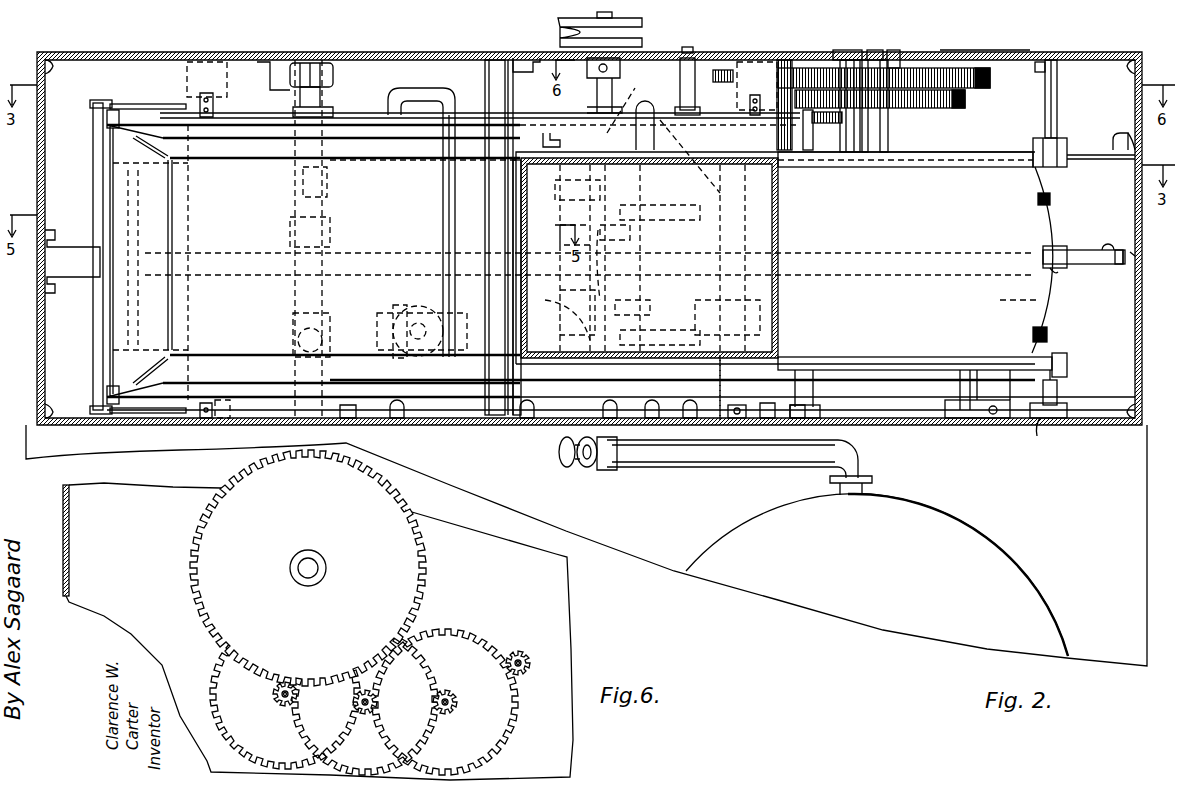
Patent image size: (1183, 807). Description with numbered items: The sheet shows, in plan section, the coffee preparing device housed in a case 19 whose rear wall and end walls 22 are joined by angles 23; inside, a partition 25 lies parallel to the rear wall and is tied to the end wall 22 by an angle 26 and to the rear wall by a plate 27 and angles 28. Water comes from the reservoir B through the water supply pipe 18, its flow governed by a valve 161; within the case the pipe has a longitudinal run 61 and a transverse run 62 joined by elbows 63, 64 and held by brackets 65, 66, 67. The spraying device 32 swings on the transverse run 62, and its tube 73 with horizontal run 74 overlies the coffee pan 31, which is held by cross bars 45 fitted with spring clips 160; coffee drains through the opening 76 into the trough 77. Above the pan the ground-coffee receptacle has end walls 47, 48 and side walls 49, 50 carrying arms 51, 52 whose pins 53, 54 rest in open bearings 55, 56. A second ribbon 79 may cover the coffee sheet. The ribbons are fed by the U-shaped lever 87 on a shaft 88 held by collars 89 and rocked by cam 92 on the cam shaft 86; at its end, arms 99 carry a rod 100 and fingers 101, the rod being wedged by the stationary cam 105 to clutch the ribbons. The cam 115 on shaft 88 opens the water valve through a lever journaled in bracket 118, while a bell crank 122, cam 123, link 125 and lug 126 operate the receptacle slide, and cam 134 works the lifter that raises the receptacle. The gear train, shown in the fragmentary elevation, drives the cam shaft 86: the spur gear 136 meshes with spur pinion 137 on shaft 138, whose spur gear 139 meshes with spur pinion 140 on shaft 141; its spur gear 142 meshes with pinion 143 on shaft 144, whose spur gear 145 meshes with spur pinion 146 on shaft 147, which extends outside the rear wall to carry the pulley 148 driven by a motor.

In FIG. 2, the water supply pipe 18 is at (668, 467).
In FIG. 2, the case 19 is at (992, 58).
In FIG. 2, the end wall 22 is at (45, 90).
In FIG. 2, the angle 23 is at (50, 58).
In FIG. 2, the partition 25 is at (1080, 160).
In FIG. 2, the angle 26 is at (1113, 147).
In FIG. 2, the plate 27 is at (540, 107).
In FIG. 2, the angle 28 is at (523, 58).
In FIG. 2, the coffee pan 31 is at (245, 126).
In FIG. 2, the spraying device 32 is at (340, 125).
In FIG. 2, the cross bar 45 is at (227, 70).
In FIG. 2, the end wall 47 is at (524, 216).
In FIG. 2, the end wall 48 is at (772, 220).
In FIG. 2, the side wall 49 is at (603, 160).
In FIG. 2, the side wall 50 is at (680, 364).
In FIG. 2, the arm 51 is at (905, 158).
In FIG. 2, the arm 52 is at (918, 366).
In FIG. 2, the pin 53 is at (1045, 97).
In FIG. 2, the pin 54 is at (1060, 394).
In FIG. 2, the bearing 55 is at (1040, 62).
In FIG. 2, the bearing 56 is at (1046, 437).
In FIG. 2, the longitudinal run 61 is at (362, 330).
In FIG. 2, the transverse run 62 is at (295, 292).
In FIG. 2, the elbow 63 is at (293, 316).
In FIG. 2, the elbow 64 is at (558, 310).
In FIG. 2, the bracket 65 is at (290, 80).
In FIG. 2, the bracket 66 is at (345, 418).
In FIG. 2, the bracket 67 is at (538, 418).
In FIG. 2, the tube 73 is at (400, 88).
In FIG. 2, the horizontal run 74 is at (449, 214).
In FIG. 2, the opening 76 is at (296, 342).
In FIG. 2, the trough 77 is at (340, 440).
In FIG. 2, the second ribbon 79 is at (516, 380).
In FIG. 2, the cam shaft 86 is at (848, 50).
In FIG. 6, the cam shaft 86 is at (318, 566).
In FIG. 2, the U-shaped lever 87 is at (240, 256).
In FIG. 2, the shaft 88 is at (718, 380).
In FIG. 2, the collar 89 is at (736, 418).
In FIG. 2, the cam 92 is at (1040, 305).
In FIG. 2, the arm 99 is at (113, 110).
In FIG. 2, the rod 100 is at (93, 150).
In FIG. 2, the finger 101 is at (150, 104).
In FIG. 2, the stationary cam 105 is at (62, 250).
In FIG. 2, the cam 115 is at (1047, 335).
In FIG. 2, the bracket 118 is at (595, 250).
In FIG. 2, the bell crank 122 is at (1085, 282).
In FIG. 2, the cam 123 is at (1055, 228).
In FIG. 2, the link 125 is at (1095, 250).
In FIG. 2, the lug 126 is at (1055, 275).
In FIG. 2, the cam 134 is at (1050, 199).
In FIG. 2, the spur gear 136 is at (990, 80).
In FIG. 6, the spur gear 136 is at (417, 582).
In FIG. 2, the spur pinion 137 is at (898, 60).
In FIG. 6, the spur pinion 137 is at (275, 700).
In FIG. 2, the shaft 138 is at (878, 50).
In FIG. 6, the shaft 138 is at (273, 690).
In FIG. 2, the spur gear 139 is at (965, 100).
In FIG. 6, the spur gear 139 is at (212, 672).
In FIG. 6, the spur pinion 140 is at (370, 708).
In FIG. 2, the shaft 141 is at (786, 50).
In FIG. 6, the shaft 141 is at (370, 695).
In FIG. 2, the spur gear 142 is at (952, 58).
In FIG. 6, the spur gear 142 is at (422, 678).
In FIG. 6, the pinion 143 is at (452, 698).
In FIG. 2, the shaft 144 is at (694, 47).
In FIG. 6, the shaft 144 is at (455, 705).
In FIG. 6, the spur gear 145 is at (512, 720).
In FIG. 2, the spur pinion 146 is at (630, 105).
In FIG. 6, the spur pinion 146 is at (522, 655).
In FIG. 2, the shaft 147 is at (612, 14).
In FIG. 6, the shaft 147 is at (530, 660).
In FIG. 2, the pulley 148 is at (640, 36).
In FIG. 2, the spring clip 160 is at (192, 110).
In FIG. 2, the valve 161 is at (588, 467).
In FIG. 2, the reservoir B is at (997, 552).